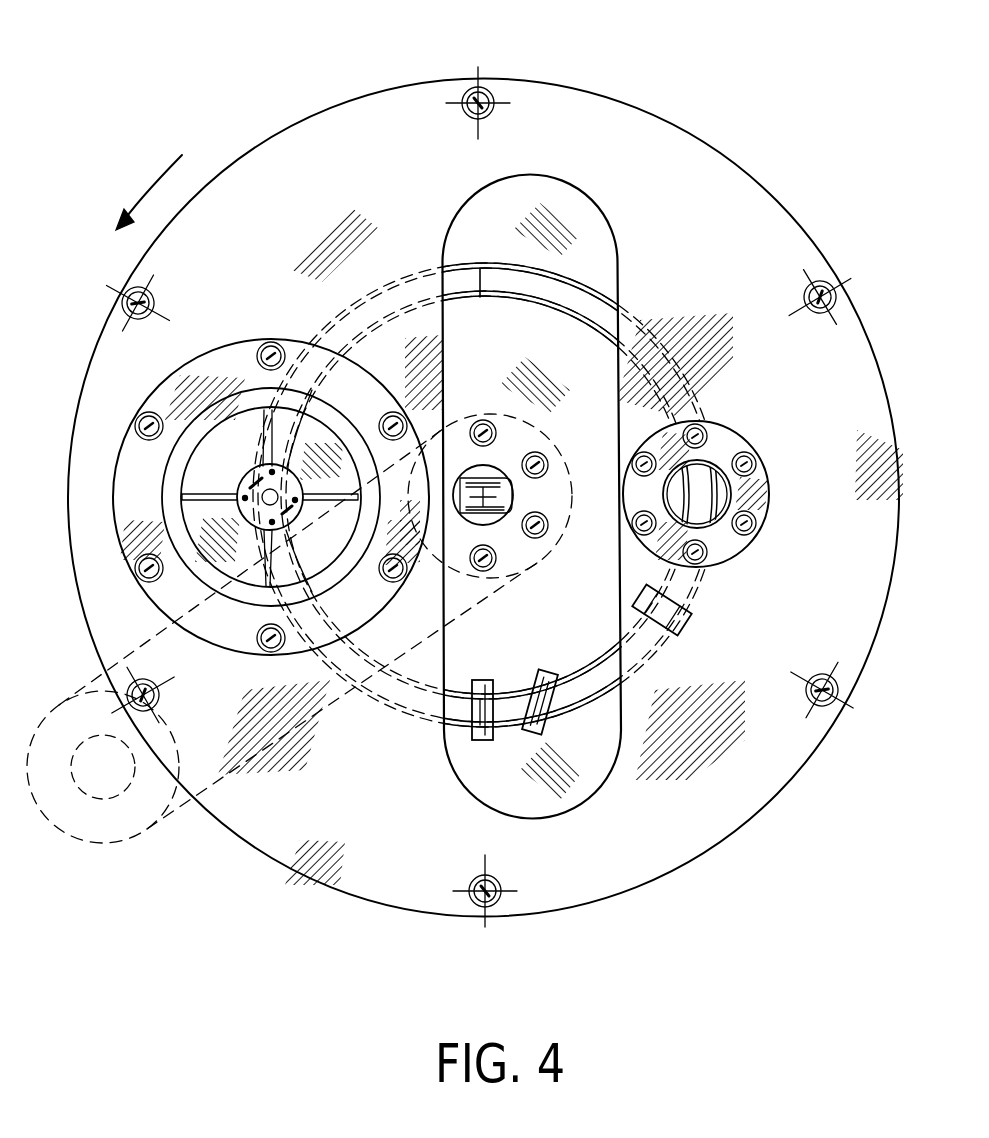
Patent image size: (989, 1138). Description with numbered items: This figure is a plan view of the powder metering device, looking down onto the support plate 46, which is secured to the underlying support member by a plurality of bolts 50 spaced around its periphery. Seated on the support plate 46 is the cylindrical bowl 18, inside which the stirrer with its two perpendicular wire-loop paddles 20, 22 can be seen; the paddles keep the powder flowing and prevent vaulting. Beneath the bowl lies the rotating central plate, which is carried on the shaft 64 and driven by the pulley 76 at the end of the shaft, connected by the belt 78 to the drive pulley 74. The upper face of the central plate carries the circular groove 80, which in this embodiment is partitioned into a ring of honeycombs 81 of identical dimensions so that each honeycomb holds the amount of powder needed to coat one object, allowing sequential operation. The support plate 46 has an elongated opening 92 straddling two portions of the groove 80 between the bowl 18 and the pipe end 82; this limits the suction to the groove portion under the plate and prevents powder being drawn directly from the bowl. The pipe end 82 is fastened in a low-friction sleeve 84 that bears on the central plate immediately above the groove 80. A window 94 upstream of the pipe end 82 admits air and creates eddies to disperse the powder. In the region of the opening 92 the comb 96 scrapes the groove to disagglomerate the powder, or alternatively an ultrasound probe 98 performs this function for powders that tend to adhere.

The bowl 18 is at (310, 575).
The paddle 20 is at (222, 497).
The paddle 22 is at (280, 540).
The support plate 46 is at (718, 235).
The bolts 50 is at (491, 88).
The shaft 64 is at (490, 525).
The drive pulley 74 is at (128, 838).
The pulley 76 is at (560, 497).
The belt 78 is at (267, 747).
The groove 80 is at (563, 250).
The ring of honeycombs 81 is at (497, 272).
The pipe end 82 is at (716, 466).
The sleeve 84 is at (742, 493).
The opening 92 is at (598, 204).
The window 94 is at (688, 622).
The comb 96 is at (485, 742).
The ultrasound probe 98 is at (553, 712).